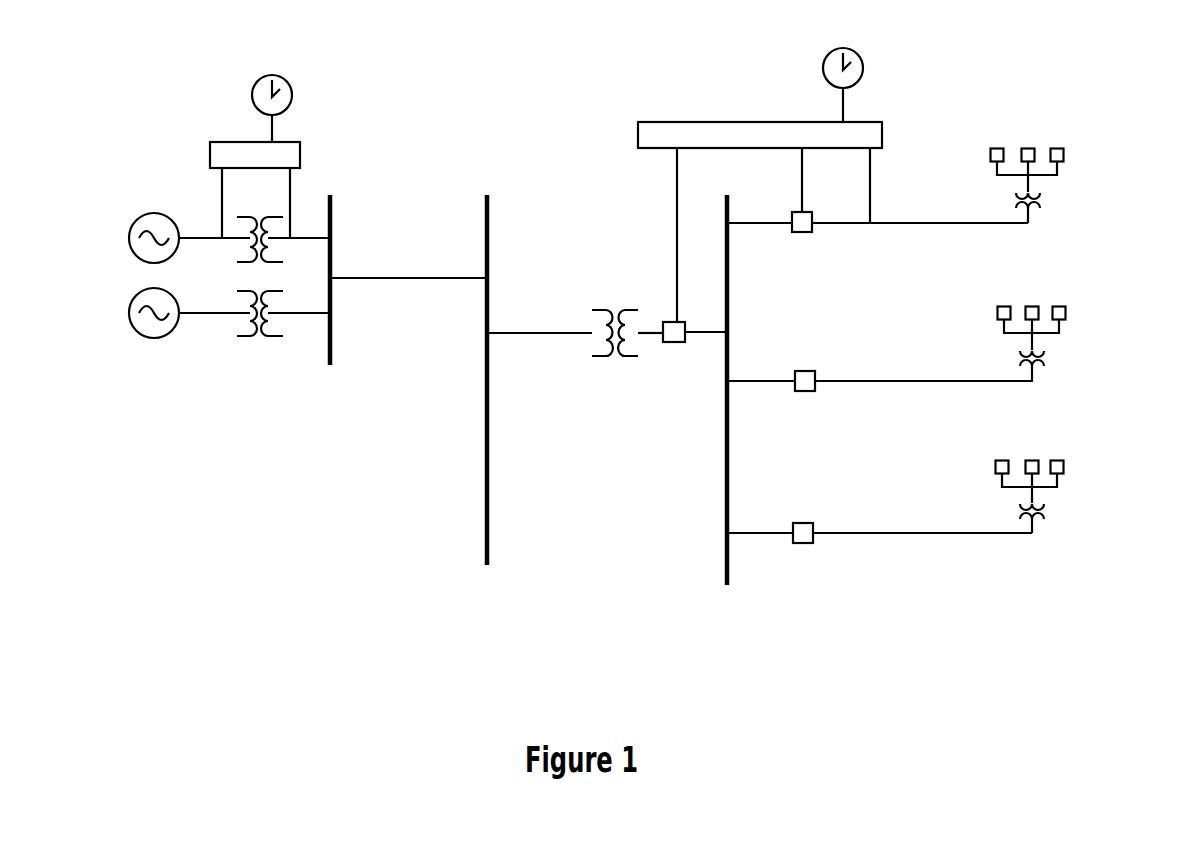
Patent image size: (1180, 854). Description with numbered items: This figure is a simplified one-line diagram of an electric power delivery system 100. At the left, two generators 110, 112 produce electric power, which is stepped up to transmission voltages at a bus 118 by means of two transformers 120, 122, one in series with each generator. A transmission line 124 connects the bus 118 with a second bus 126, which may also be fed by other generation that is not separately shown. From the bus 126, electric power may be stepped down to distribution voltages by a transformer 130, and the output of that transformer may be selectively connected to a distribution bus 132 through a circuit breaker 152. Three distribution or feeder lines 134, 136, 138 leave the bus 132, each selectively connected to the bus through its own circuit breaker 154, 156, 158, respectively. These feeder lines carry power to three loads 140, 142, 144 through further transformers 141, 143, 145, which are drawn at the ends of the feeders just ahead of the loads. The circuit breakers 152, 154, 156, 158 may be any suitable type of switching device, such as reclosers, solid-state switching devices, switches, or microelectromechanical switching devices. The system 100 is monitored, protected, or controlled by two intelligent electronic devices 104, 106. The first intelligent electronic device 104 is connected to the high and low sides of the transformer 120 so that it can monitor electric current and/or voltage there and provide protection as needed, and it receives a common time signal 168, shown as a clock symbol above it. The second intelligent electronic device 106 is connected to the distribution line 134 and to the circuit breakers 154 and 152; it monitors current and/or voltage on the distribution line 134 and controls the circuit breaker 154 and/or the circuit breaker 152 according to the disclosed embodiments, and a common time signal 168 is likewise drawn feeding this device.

The electric power delivery system 100 is at (1098, 56).
The intelligent electronic device 104 is at (237, 142).
The intelligent electronic device 106 is at (775, 122).
The generator 110 is at (128, 234).
The generator 112 is at (128, 311).
The bus 118 is at (333, 343).
The transformer 120 is at (241, 256).
The transformer 122 is at (258, 338).
The transmission line 124 is at (418, 282).
The bus 126 is at (490, 356).
The transformer 130 is at (618, 310).
The bus 132 is at (724, 541).
The distribution line 134 is at (770, 226).
The distribution line 136 is at (748, 384).
The distribution line 138 is at (752, 536).
The load 140 is at (1070, 152).
The transformer 141 is at (1042, 200).
The load 142 is at (1075, 312).
The transformer 143 is at (1046, 358).
The load 144 is at (1075, 466).
The transformer 145 is at (1046, 511).
The circuit breaker 152 is at (679, 343).
The circuit breaker 154 is at (809, 233).
The circuit breaker 156 is at (812, 392).
The circuit breaker 158 is at (808, 545).
The common time signal 168 is at (292, 95).